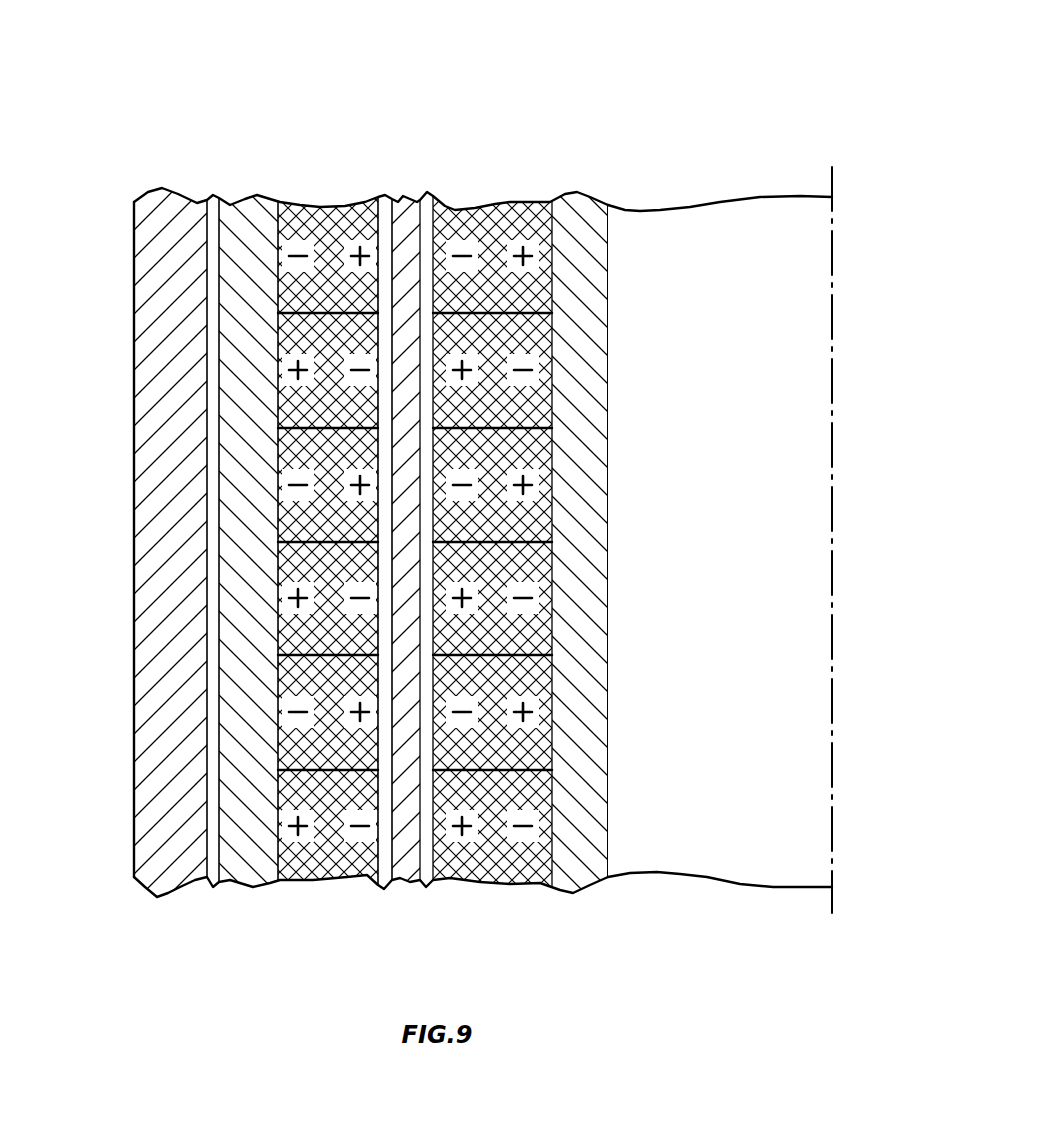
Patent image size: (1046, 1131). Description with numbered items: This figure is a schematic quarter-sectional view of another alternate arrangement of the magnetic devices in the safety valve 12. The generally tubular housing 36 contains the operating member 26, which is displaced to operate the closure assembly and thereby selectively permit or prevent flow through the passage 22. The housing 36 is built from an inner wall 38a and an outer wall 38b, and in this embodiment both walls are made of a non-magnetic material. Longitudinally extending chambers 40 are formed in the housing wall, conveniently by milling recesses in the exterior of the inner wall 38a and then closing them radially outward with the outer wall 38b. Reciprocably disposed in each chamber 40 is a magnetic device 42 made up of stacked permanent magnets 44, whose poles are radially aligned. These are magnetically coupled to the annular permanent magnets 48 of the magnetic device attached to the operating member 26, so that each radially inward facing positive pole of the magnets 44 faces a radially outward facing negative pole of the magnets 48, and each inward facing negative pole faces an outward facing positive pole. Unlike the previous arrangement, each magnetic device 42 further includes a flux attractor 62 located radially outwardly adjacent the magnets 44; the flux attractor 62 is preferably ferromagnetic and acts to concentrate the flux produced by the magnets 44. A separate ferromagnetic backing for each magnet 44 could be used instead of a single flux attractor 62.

The safety valve 12 is at (775, 122).
The passage 22 is at (743, 863).
The operating member 26 is at (580, 545).
The housing 36 is at (131, 876).
The inner wall 38a is at (412, 545).
The outer wall 38b is at (170, 545).
The chambers 40 is at (213, 545).
The magnetic device 42 is at (328, 545).
The permanent magnets 44 is at (277, 298).
The permanent magnets 48 is at (492, 545).
The flux attractor 62 is at (328, 545).